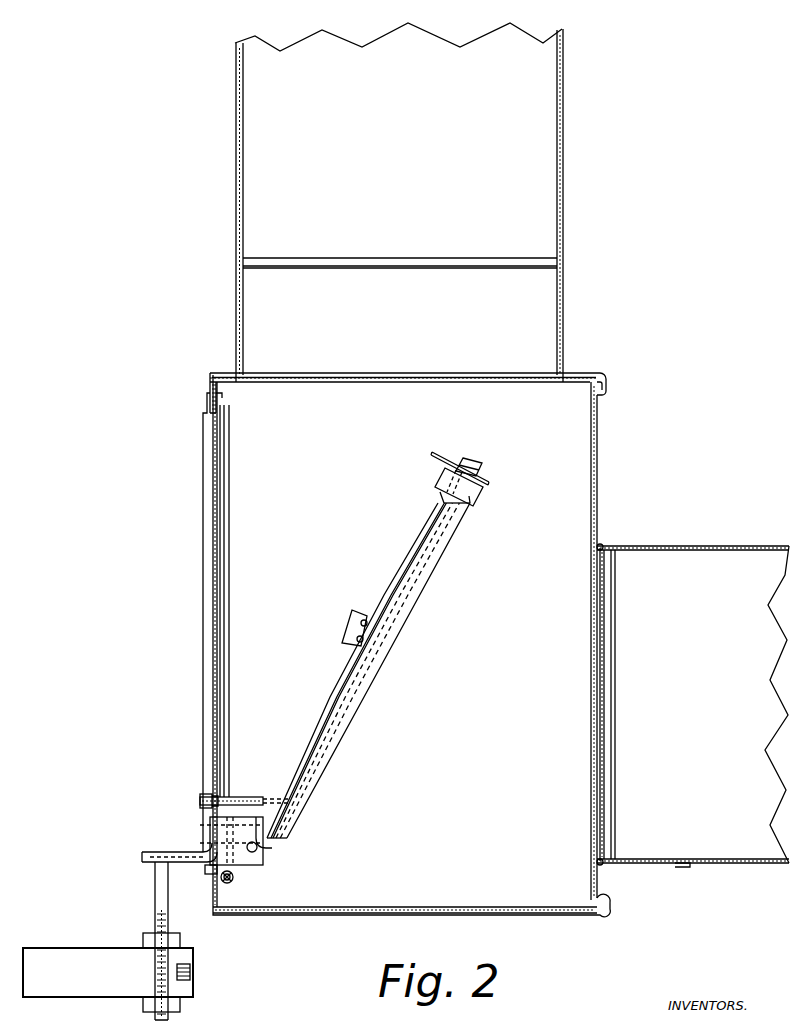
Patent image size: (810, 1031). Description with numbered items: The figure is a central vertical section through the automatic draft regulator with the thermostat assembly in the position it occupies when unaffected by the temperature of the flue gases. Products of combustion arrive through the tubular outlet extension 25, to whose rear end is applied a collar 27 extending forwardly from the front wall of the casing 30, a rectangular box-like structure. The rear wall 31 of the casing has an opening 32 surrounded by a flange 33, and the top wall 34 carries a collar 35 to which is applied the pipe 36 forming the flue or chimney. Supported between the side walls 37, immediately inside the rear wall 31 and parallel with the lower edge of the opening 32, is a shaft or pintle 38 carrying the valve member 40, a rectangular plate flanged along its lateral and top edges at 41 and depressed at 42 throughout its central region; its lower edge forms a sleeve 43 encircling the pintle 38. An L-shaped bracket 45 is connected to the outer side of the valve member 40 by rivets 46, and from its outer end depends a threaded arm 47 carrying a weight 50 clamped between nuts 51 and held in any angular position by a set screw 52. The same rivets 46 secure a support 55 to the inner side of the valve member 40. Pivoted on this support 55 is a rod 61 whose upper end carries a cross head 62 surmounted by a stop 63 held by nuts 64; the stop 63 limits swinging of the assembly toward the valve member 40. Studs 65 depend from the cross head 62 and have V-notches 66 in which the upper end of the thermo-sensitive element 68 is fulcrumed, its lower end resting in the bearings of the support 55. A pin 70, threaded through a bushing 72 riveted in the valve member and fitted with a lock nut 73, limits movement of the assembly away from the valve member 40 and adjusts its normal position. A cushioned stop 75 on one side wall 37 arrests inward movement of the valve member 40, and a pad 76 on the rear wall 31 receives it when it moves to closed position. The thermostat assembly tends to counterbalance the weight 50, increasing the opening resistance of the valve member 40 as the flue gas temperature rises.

The tubular outlet extension 25 is at (693, 704).
The collar 27 is at (683, 867).
The casing 30 is at (355, 920).
The rear wall 31 is at (210, 384).
The opening 32 is at (205, 470).
The flange 33 is at (208, 875).
The top wall 34 is at (578, 374).
The collar 35 is at (540, 301).
The pipe 36 is at (237, 187).
The side walls 37 is at (578, 470).
The shaft or pintle 38 is at (234, 877).
The valve member 40 is at (230, 615).
The flange 41 is at (228, 406).
The depressed central region 42 is at (213, 560).
The sleeve 43 is at (232, 881).
The L-shaped bracket 45 is at (175, 852).
The fastening means or rivets 46 is at (213, 826).
The arm 47 is at (157, 893).
The weight 50 is at (108, 972).
The nuts 51 is at (178, 942).
The set screw 52 is at (192, 969).
The support 55 is at (255, 818).
The rod 61 is at (334, 700).
The cross head 62 is at (476, 495).
The stop 63 is at (432, 456).
The nuts 64 is at (482, 470).
The studs 65 is at (443, 492).
The V-notches 66 is at (440, 500).
The thermo-sensitive element 68 is at (372, 682).
The pin 70 is at (247, 797).
The bushing 72 is at (210, 796).
The lock nut 73 is at (203, 803).
The stop 75 is at (345, 625).
The pad 76 is at (222, 396).